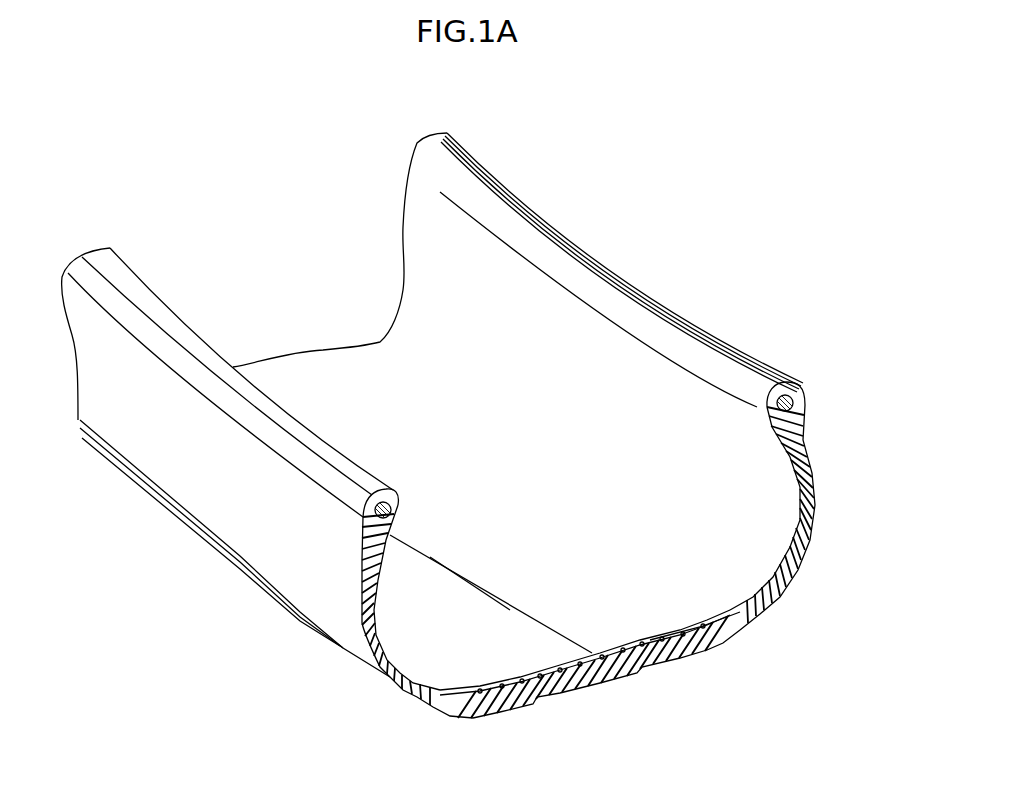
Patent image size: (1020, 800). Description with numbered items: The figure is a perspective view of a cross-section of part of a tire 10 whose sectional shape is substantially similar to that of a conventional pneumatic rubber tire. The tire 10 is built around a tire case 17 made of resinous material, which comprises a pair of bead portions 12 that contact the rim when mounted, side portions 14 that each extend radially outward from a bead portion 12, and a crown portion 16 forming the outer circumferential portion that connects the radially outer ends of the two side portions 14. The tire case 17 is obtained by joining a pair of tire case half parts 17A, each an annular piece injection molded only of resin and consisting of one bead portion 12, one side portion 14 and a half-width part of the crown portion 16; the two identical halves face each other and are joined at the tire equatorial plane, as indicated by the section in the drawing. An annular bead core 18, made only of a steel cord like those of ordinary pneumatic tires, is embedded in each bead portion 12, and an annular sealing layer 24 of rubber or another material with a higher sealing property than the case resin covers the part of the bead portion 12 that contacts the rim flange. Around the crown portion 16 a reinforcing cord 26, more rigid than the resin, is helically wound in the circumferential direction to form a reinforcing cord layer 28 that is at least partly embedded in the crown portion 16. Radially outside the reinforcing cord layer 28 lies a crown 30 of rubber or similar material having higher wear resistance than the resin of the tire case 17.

The tire 10 is at (656, 238).
The bead portion 12 is at (354, 468).
The side portion 14 is at (317, 578).
The crown portion 16 is at (677, 645).
The tire case 17 is at (578, 541).
The tire case half part 17A is at (462, 603).
The bead core 18 is at (392, 505).
The sealing layer 24 is at (303, 458).
The reinforcing cord 26 is at (522, 683).
The reinforcing cord layer 28 is at (562, 672).
The crown 30 is at (730, 647).